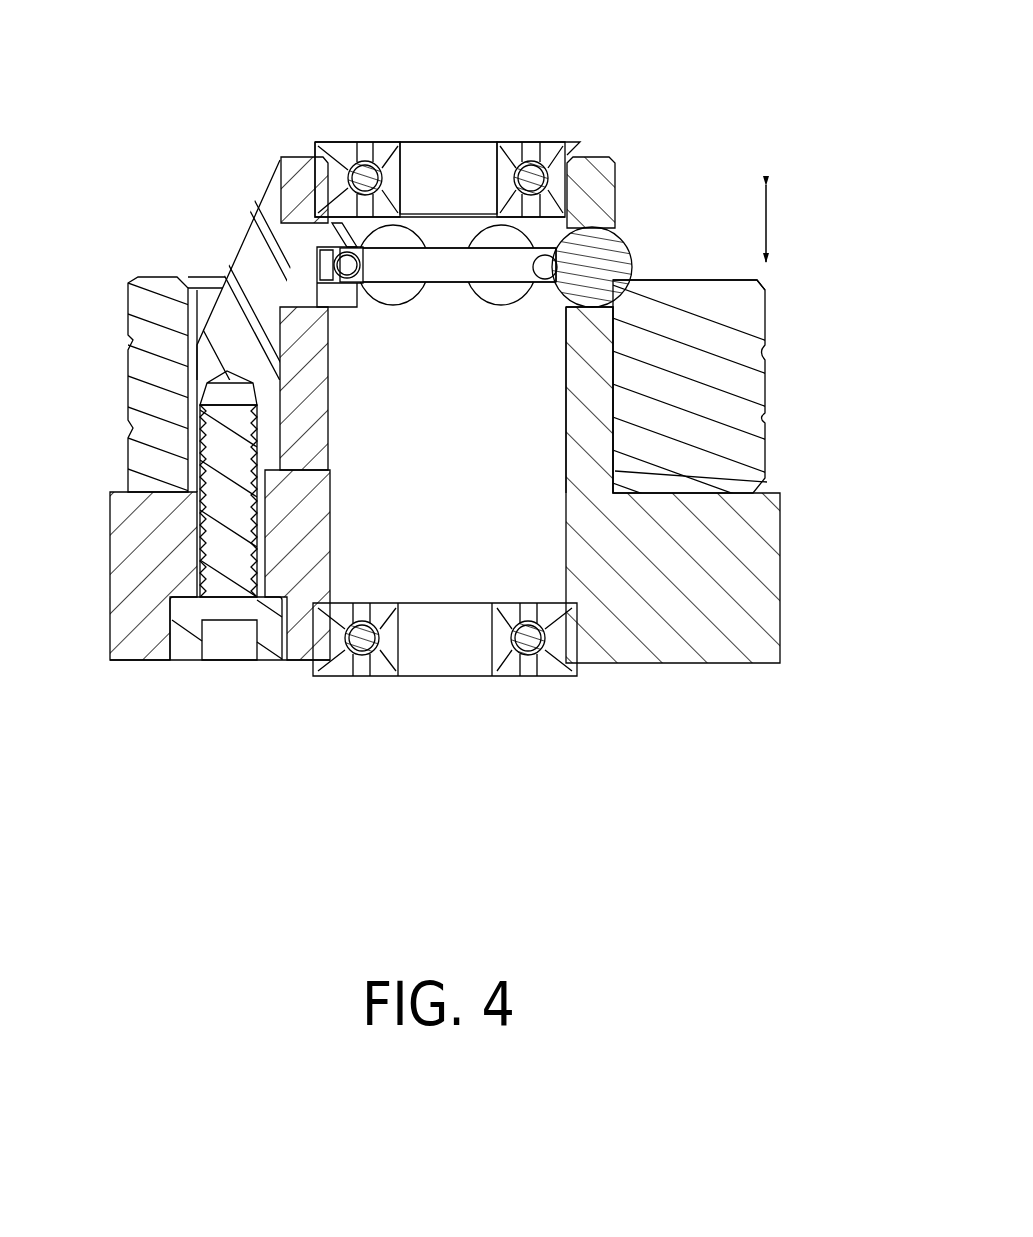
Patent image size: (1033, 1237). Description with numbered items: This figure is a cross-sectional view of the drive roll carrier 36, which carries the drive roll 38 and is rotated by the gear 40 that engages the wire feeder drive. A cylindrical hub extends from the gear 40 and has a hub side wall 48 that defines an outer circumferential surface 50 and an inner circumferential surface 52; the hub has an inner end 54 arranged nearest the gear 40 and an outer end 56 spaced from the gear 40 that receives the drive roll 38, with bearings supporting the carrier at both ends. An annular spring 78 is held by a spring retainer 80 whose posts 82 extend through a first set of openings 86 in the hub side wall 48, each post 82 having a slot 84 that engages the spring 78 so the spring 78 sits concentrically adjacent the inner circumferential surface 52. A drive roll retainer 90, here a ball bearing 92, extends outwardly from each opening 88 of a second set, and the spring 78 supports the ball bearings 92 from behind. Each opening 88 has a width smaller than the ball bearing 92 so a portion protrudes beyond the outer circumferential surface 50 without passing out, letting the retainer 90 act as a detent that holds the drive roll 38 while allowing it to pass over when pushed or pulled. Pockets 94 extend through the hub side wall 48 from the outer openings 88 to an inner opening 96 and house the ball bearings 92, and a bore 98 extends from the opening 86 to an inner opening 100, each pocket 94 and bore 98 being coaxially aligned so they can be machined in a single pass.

The drive roll carrier 36 is at (165, 712).
The drive roll 38 is at (148, 397).
The gear 40 is at (718, 548).
The hub side wall 48 is at (613, 387).
The outer circumferential surface 50 is at (613, 335).
The inner circumferential surface 52 is at (565, 450).
The inner end 54 is at (620, 462).
The outer end 56 is at (630, 156).
The spring 78 is at (487, 262).
The spring retainer 80 is at (404, 208).
The post 82 is at (290, 245).
The slot 84 is at (378, 208).
The opening 86 is at (292, 160).
The opening 88 is at (617, 230).
The drive roll retainer 90 is at (645, 265).
The ball bearing 92 is at (622, 240).
The pocket 94 is at (583, 333).
The inner opening 96 is at (560, 303).
The bore 98 is at (330, 352).
The inner opening 100 is at (335, 310).